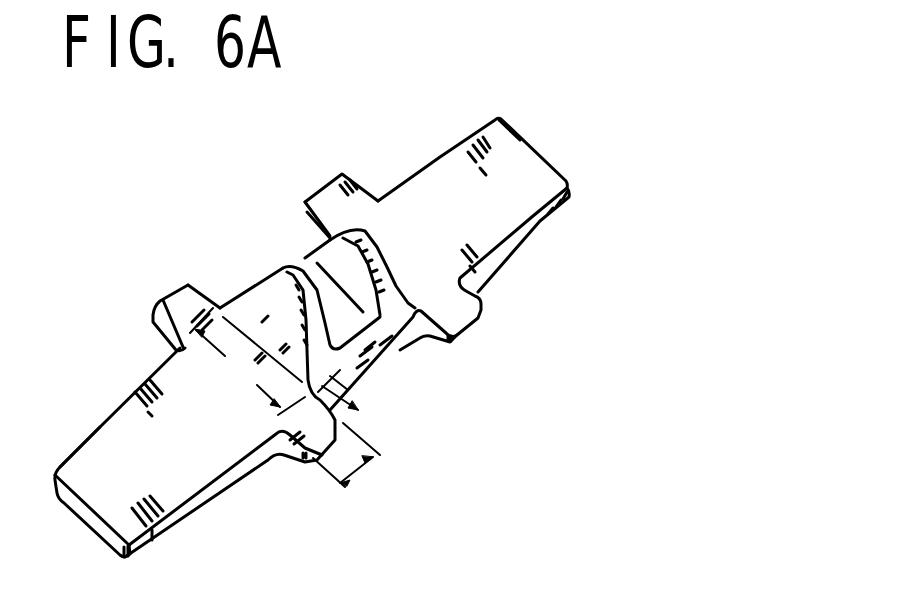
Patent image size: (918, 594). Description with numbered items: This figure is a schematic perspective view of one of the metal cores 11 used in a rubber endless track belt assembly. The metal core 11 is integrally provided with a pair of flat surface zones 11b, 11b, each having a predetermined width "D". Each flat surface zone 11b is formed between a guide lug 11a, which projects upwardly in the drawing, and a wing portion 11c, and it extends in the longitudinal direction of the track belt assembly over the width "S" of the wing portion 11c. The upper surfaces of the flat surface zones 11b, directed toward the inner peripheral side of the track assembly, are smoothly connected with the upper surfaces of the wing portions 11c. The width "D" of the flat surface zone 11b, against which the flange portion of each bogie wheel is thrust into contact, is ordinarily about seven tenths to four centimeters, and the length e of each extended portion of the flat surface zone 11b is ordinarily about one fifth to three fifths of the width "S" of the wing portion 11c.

The metal core 11 is at (284, 218).
The guide lug 11a is at (293, 267).
The flat surface zone 11b is at (175, 292).
The wing portion 11c is at (100, 428).